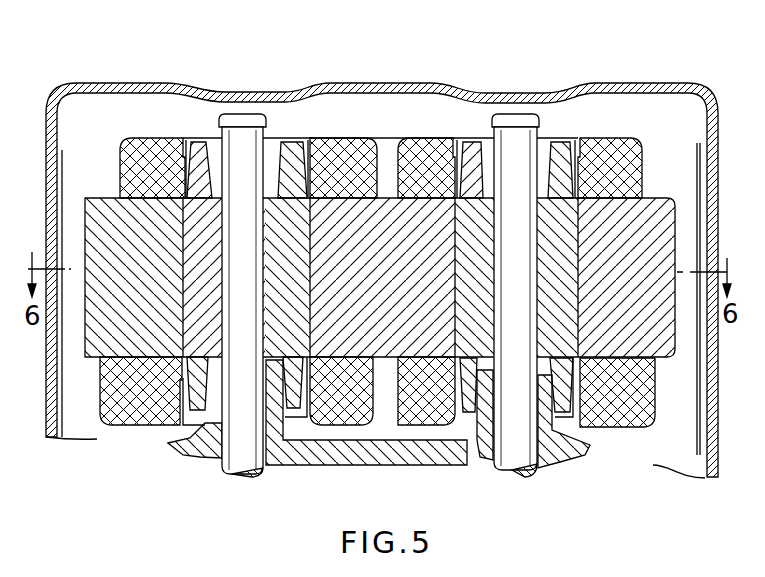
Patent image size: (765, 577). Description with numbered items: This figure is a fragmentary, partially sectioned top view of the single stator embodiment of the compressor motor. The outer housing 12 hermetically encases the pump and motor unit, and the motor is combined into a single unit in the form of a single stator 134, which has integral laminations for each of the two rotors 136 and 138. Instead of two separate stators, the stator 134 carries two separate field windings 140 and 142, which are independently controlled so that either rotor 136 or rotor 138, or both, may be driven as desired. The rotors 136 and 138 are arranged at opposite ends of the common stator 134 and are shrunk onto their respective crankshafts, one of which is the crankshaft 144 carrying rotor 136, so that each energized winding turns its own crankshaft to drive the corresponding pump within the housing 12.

The outer housing 12 is at (615, 85).
The single stator 134 is at (657, 348).
The rotor 136 is at (187, 370).
The rotor 138 is at (611, 395).
The field winding 140 is at (127, 145).
The field winding 142 is at (630, 165).
The crankshaft 144 is at (237, 457).